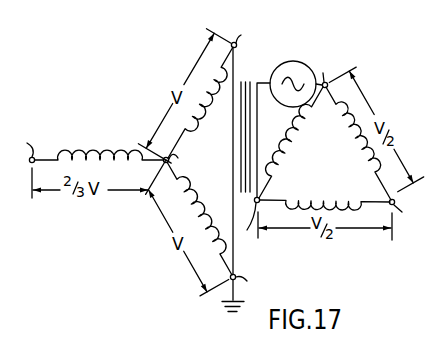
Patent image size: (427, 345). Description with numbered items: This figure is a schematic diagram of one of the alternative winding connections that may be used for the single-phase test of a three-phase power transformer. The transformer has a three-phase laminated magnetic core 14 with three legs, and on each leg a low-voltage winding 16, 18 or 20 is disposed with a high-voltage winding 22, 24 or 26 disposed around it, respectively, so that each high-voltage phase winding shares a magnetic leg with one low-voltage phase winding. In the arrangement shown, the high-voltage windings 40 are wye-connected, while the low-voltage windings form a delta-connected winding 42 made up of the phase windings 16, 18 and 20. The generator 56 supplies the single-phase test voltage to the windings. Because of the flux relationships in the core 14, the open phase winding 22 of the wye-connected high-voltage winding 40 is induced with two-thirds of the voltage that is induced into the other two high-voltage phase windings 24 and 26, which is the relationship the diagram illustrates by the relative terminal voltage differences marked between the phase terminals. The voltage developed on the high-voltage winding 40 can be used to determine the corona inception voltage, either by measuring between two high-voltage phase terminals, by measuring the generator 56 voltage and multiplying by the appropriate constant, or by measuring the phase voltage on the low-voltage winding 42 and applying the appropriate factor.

The three-phase laminated magnetic core 14 is at (242, 80).
The low-voltage winding 16 is at (353, 206).
The low-voltage winding 18 is at (292, 132).
The low-voltage winding 20 is at (376, 171).
The high-voltage winding 22 is at (117, 152).
The high-voltage winding 24 is at (202, 104).
The high-voltage winding 26 is at (198, 222).
The high-voltage winding 40 is at (147, 109).
The low-voltage winding 42 is at (325, 97).
The generator 56 is at (290, 44).